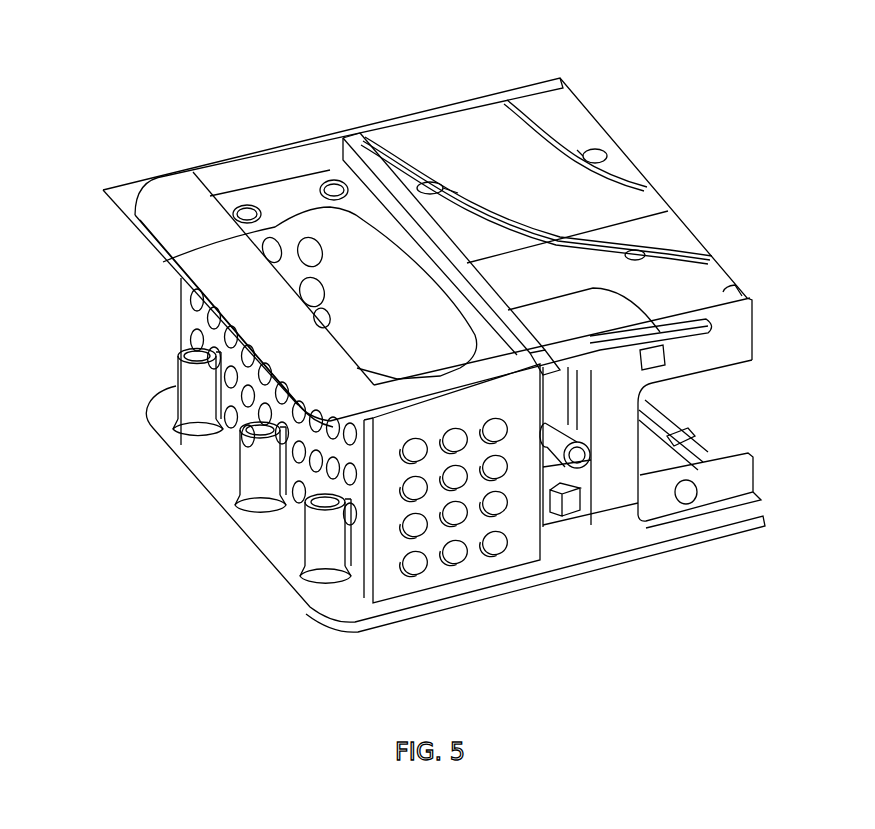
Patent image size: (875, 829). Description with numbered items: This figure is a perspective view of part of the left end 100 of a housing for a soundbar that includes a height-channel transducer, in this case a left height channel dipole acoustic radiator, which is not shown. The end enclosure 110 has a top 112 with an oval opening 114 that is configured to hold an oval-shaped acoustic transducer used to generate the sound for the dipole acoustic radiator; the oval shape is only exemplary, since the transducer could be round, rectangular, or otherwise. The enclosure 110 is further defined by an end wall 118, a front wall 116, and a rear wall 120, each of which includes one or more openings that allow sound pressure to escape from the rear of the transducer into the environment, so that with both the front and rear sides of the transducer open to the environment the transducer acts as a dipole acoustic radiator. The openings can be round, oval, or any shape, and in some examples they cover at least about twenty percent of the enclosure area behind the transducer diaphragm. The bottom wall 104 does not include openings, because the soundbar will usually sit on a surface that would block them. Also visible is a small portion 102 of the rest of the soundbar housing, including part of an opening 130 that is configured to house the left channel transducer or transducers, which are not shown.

The left end of housing 100 is at (235, 623).
The small portion of soundbar housing 102 is at (537, 90).
The bottom wall 104 is at (387, 620).
The end enclosure 110 is at (299, 103).
The top 112 is at (282, 202).
The oval opening 114 is at (165, 262).
The front wall 116 is at (510, 560).
The end wall 118 is at (230, 430).
The rear wall 120 is at (297, 243).
The opening 130 is at (713, 393).